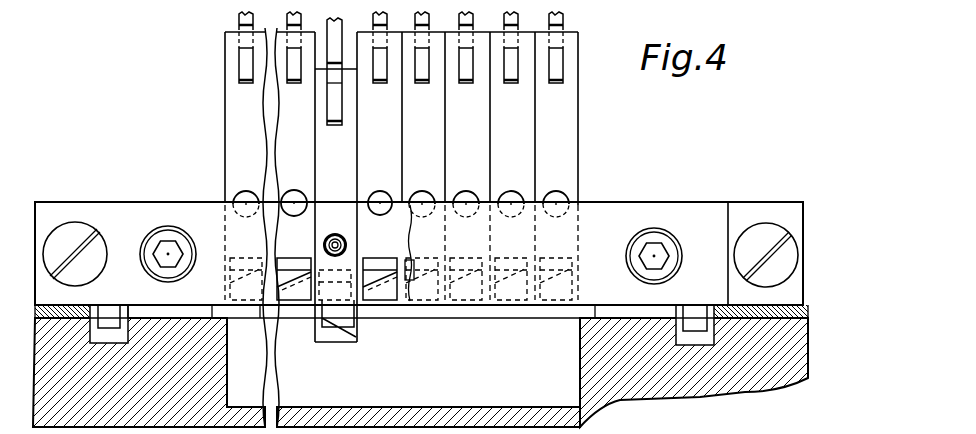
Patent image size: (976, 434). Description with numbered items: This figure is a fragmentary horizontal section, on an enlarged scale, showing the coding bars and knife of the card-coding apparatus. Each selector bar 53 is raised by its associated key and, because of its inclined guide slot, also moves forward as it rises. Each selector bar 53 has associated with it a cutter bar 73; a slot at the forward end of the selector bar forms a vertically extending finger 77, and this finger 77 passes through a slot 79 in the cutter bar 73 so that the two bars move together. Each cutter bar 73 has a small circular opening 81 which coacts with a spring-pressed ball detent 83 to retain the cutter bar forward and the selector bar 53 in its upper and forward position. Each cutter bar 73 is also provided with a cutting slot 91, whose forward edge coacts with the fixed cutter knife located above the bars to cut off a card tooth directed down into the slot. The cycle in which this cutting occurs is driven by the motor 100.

The selector bar 53 is at (502, 13).
The cutter bar 73 is at (327, 136).
The finger 77 is at (246, 68).
The slot 79 is at (553, 84).
The circular opening 81 is at (284, 195).
The ball detent 83 is at (335, 238).
The cutting slot 91 is at (385, 323).
The motor 100 is at (335, 62).